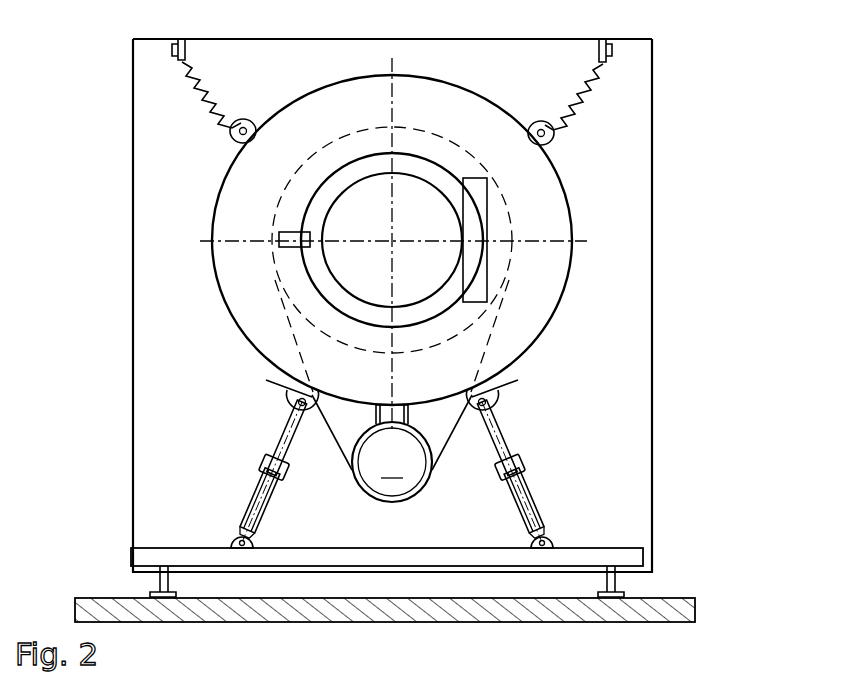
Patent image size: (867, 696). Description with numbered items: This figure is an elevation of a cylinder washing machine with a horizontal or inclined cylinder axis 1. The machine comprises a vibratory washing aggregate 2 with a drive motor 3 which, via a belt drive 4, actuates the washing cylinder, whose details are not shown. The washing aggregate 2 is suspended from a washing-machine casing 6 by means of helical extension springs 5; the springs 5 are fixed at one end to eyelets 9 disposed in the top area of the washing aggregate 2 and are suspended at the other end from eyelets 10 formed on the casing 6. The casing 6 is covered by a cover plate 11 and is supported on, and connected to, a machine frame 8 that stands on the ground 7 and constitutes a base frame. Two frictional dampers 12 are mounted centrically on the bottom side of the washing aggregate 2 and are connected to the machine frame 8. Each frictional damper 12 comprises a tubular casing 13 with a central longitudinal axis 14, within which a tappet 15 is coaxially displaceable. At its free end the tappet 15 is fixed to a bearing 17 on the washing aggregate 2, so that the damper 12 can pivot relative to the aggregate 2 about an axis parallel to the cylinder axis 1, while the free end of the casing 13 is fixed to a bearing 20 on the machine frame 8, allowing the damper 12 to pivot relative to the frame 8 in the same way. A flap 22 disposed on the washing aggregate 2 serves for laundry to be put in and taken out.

The cylinder axis 1 is at (392, 241).
The vibratory washing aggregate 2 is at (575, 193).
The drive motor 3 is at (392, 453).
The belt drive 4 is at (500, 342).
The helical extension springs 5 is at (215, 100).
The washing-machine casing 6 is at (133, 347).
The ground 7 is at (110, 598).
The machine frame 8 is at (131, 561).
The eyelets 9 is at (235, 135).
The eyelets 10 is at (178, 57).
The cover plate 11 is at (213, 39).
The frictional dampers 12 is at (235, 454).
The tubular casing 13 is at (253, 497).
The central longitudinal axis 14 is at (285, 382).
The tappet 15 is at (268, 440).
The bearing 17 is at (288, 398).
The bearing 20 is at (233, 545).
The flap 22 is at (305, 210).